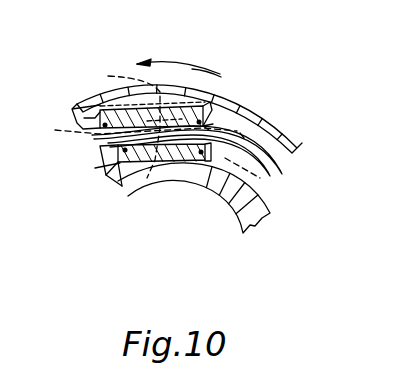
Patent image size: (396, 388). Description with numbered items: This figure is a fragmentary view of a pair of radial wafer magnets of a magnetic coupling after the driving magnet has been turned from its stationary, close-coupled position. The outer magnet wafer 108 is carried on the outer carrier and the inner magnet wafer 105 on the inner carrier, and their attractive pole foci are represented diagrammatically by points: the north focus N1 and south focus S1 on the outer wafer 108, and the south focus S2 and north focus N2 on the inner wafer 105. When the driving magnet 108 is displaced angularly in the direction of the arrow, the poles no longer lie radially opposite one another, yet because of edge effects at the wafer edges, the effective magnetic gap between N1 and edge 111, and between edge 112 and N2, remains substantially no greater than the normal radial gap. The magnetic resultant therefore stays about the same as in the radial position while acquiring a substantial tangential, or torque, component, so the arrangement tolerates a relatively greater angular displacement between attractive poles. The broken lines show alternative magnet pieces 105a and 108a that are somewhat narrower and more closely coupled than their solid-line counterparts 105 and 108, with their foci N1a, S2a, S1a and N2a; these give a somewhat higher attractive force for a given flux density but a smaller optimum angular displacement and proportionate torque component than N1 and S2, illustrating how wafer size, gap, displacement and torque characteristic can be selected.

The north attractive focus of outer magnet wafer N1 is at (77, 104).
The north attractive focus of narrower outer magnet piece N1a is at (119, 122).
The outer magnet wafer 108 is at (212, 96).
The south attractive focus of outer magnet wafer S1 is at (212, 104).
The edge of magnet wafer 112 is at (216, 120).
The south attractive focus of narrower outer magnet piece S1a is at (240, 130).
The narrower outer magnet piece 108a is at (255, 164).
The north attractive focus of narrower inner magnet piece N2a is at (272, 185).
The north attractive focus of inner magnet wafer N2 is at (195, 165).
The south attractive focus of inner magnet wafer S2 is at (100, 170).
The narrower inner magnet piece 105a is at (147, 177).
The inner magnet wafer 105 is at (186, 172).
The edge of magnet wafer 111 is at (100, 149).
The south attractive focus of narrower inner magnet piece S2a is at (129, 123).